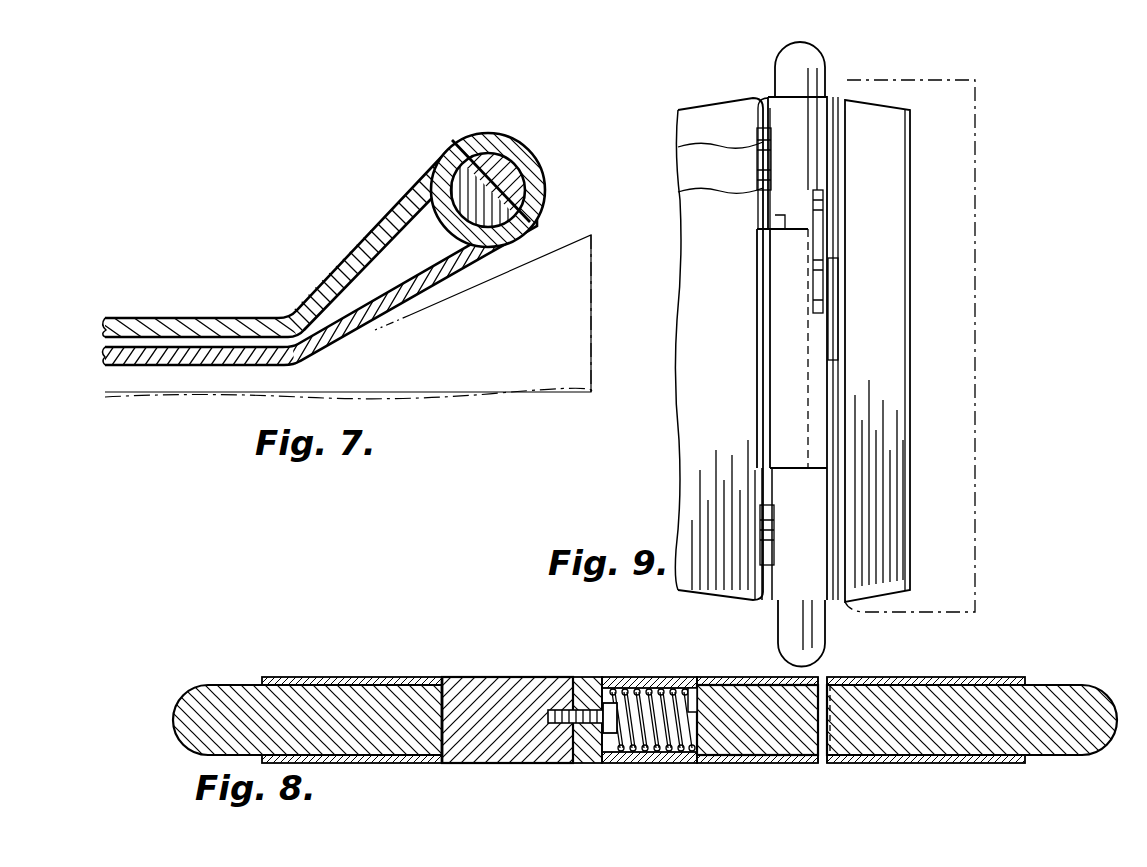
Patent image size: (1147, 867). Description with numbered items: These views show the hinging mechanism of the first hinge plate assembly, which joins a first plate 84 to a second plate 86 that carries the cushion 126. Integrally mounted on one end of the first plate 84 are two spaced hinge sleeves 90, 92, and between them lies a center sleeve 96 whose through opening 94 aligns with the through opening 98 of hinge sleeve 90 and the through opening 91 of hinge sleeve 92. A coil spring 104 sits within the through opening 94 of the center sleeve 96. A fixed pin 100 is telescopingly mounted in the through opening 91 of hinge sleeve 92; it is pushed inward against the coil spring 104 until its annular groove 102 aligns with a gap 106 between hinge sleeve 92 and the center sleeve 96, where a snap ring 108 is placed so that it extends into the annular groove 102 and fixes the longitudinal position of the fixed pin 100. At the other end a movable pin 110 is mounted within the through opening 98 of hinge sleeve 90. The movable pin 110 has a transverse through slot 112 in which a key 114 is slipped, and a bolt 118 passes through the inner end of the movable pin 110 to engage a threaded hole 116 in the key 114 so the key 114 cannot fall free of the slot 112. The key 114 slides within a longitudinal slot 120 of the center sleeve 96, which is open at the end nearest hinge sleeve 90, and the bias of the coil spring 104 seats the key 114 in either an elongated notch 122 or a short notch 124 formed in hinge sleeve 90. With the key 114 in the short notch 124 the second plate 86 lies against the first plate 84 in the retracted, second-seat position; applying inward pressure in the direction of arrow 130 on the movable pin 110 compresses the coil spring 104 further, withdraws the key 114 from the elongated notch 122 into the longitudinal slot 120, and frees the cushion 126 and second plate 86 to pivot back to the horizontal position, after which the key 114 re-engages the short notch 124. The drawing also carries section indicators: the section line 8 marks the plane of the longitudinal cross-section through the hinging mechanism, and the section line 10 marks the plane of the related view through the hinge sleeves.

In FIG. 7, the first plate 84 is at (245, 318).
In FIG. 9, the first plate 84 is at (728, 110).
In FIG. 7, the second plate 86 is at (205, 365).
In FIG. 9, the second plate 86 is at (880, 125).
In FIG. 9, the hinge sleeve 90 is at (783, 140).
In FIG. 8, the hinge sleeve 90 is at (395, 762).
In FIG. 8, the through opening 91 is at (955, 690).
In FIG. 9, the hinge sleeve 92 is at (785, 587).
In FIG. 8, the hinge sleeve 92 is at (997, 682).
In FIG. 7, the through opening 94 is at (530, 180).
In FIG. 8, the through opening 94 is at (705, 690).
In FIG. 7, the center sleeve 96 is at (492, 133).
In FIG. 9, the center sleeve 96 is at (780, 390).
In FIG. 8, the center sleeve 96 is at (740, 762).
In FIG. 8, the through opening 98 is at (290, 688).
In FIG. 9, the fixed pin 100 is at (793, 630).
In FIG. 8, the fixed pin 100 is at (1065, 700).
In FIG. 8, the annular groove 102 is at (833, 733).
In FIG. 8, the coil spring 104 is at (630, 680).
In FIG. 8, the gap 106 is at (823, 763).
In FIG. 8, the snap ring 108 is at (825, 675).
In FIG. 7, the movable pin 110 is at (520, 160).
In FIG. 9, the movable pin 110 is at (822, 62).
In FIG. 8, the movable pin 110 is at (352, 697).
In FIG. 8, the transverse through slot 112 is at (455, 697).
In FIG. 7, the key 114 is at (545, 198).
In FIG. 9, the key 114 is at (833, 195).
In FIG. 8, the threaded hole 116 is at (560, 762).
In FIG. 8, the bolt 118 is at (585, 677).
In FIG. 7, the longitudinal slot 120 is at (450, 143).
In FIG. 9, the longitudinal slot 120 is at (833, 305).
In FIG. 8, the longitudinal slot 120 is at (585, 700).
In FIG. 9, the elongated notch 122 is at (845, 172).
In FIG. 9, the short notch 124 is at (770, 205).
In FIG. 7, the cushion 126 is at (495, 398).
In FIG. 9, the cushion 126 is at (1000, 490).
In FIG. 9, the arrow 130 is at (795, 10).
In FIG. 7, the section line 8- 8 is at (445, 145).
In FIG. 9, the section line 10- 10 is at (760, 207).